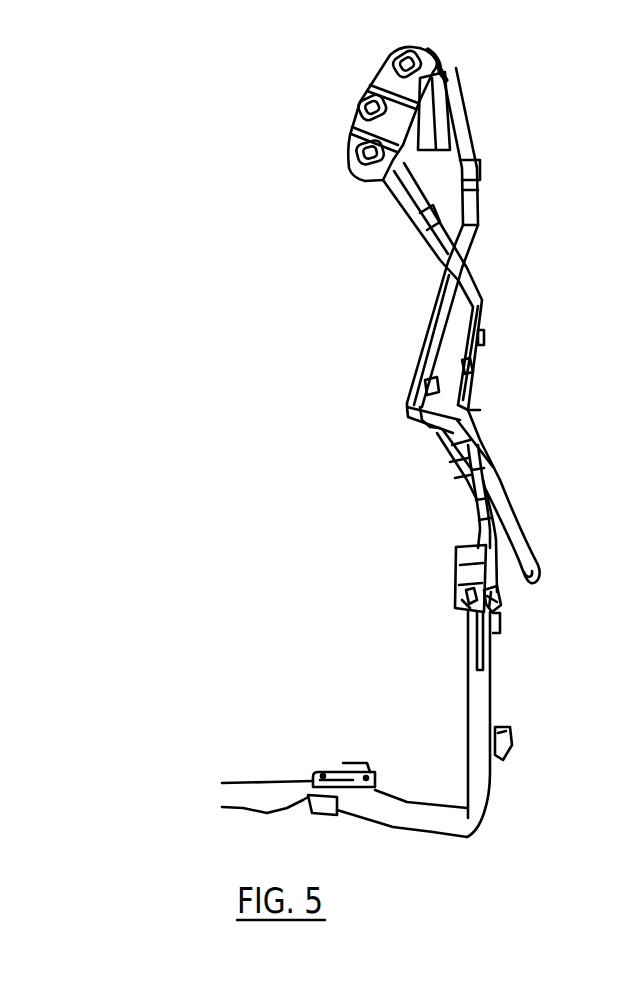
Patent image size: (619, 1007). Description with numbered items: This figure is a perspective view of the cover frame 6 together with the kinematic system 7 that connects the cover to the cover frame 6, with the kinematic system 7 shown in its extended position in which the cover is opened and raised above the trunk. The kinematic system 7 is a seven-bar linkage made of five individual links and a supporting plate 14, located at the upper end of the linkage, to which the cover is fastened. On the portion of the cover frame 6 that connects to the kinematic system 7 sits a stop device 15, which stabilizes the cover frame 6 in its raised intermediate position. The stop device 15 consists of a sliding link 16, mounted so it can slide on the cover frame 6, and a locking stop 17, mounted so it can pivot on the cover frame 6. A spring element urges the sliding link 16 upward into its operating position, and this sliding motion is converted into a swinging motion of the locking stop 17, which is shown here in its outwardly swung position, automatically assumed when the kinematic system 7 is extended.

The supporting plate 14 is at (355, 115).
The kinematic system 7 is at (400, 284).
The stop device 15 is at (437, 542).
The sliding link 16 is at (457, 595).
The locking stop 17 is at (490, 603).
The cover frame 6 is at (490, 785).